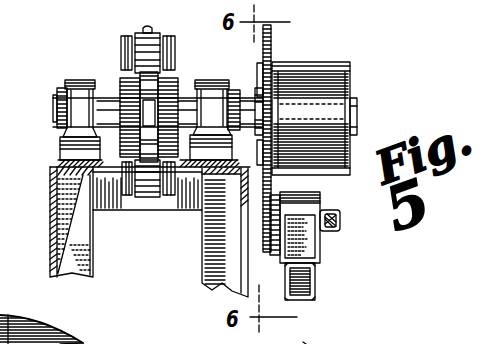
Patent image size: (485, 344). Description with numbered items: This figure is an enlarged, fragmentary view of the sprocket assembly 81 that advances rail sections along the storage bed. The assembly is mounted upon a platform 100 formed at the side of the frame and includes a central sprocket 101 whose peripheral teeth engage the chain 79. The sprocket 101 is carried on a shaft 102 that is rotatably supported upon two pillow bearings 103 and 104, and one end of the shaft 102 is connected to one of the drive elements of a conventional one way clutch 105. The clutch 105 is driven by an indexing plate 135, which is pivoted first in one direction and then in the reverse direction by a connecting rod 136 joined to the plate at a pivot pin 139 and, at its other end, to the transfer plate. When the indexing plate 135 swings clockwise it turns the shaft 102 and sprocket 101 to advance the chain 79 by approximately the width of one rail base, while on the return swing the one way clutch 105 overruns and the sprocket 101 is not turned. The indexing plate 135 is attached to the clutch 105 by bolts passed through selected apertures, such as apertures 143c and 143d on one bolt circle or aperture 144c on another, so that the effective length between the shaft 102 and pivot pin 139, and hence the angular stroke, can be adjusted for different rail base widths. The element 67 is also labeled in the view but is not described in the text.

The chain 79 is at (147, 36).
The sprocket assembly 81 is at (271, 46).
The platform 100 is at (58, 191).
The central sprocket 101 is at (122, 104).
The shaft 102 is at (248, 102).
The pillow bearing 103 is at (210, 80).
The pillow bearing 104 is at (70, 82).
The one way clutch 105 is at (322, 66).
The indexing plate 135 is at (258, 242).
The connecting rod 136 is at (332, 262).
The pivot pin 139 is at (340, 220).
The aperture 143d is at (4, 280).
The aperture 144c is at (65, 341).
The aperture 143c is at (99, 334).
The element 67 is at (305, 342).